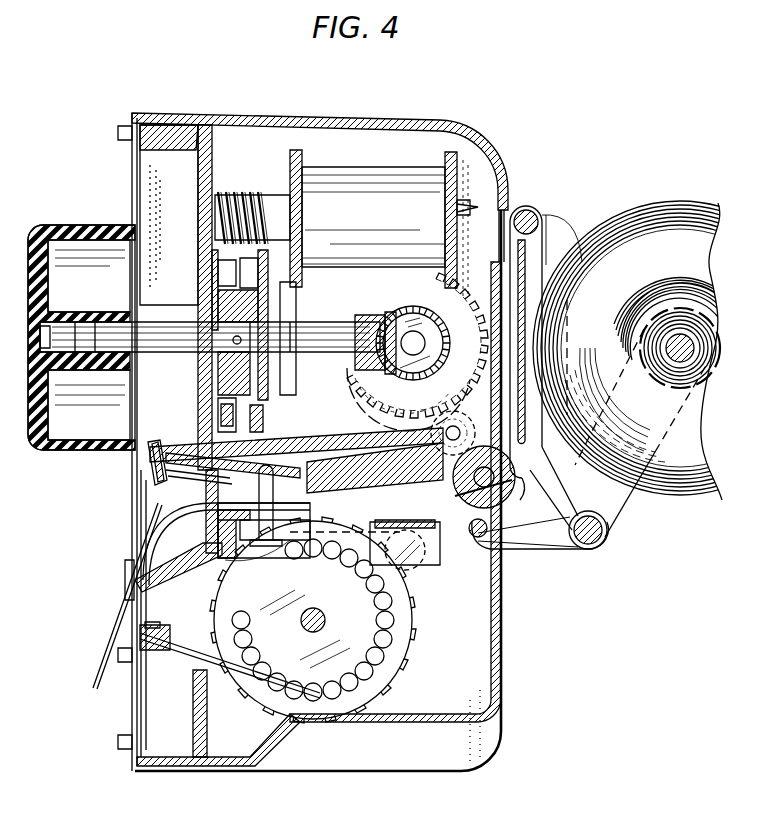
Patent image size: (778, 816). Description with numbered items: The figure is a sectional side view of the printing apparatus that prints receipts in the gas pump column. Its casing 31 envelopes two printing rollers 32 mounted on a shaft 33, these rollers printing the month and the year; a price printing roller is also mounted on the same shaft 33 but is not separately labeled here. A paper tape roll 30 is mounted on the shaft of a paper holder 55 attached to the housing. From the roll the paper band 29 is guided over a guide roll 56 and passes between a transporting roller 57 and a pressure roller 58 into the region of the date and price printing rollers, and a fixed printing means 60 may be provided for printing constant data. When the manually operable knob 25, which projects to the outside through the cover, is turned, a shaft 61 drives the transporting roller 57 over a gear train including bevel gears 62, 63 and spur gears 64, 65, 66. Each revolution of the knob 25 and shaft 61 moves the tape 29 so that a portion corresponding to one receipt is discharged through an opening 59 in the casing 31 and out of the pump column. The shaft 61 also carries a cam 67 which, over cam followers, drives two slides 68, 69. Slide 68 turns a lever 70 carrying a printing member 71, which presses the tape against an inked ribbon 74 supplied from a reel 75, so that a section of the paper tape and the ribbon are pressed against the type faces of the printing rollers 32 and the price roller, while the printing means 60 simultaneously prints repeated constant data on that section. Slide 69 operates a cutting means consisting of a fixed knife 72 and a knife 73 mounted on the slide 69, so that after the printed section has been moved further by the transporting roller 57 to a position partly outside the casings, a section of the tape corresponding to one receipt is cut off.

The manually operable knob 25 is at (95, 233).
The paper band 29 is at (110, 646).
The paper tape roll 30 is at (625, 238).
The casing 31 is at (327, 122).
The printing rollers 32 is at (400, 632).
The shaft 33 is at (320, 620).
The paper holder 55 is at (620, 510).
The guide roll 56 is at (528, 210).
The transporting roller 57 is at (513, 493).
The pressure roller 58 is at (525, 545).
The opening 59 is at (130, 580).
The fixed printing means 60 is at (428, 562).
The shaft 61 is at (72, 326).
The bevel gear 62 is at (390, 312).
The bevel gear 63 is at (418, 384).
The spur gear 64 is at (472, 308).
The spur gear 65 is at (466, 422).
The spur gear 66 is at (455, 476).
The cam 67 is at (252, 304).
The slide 68 is at (262, 418).
The slide 69 is at (212, 414).
The lever 70 is at (303, 447).
The printing member 71 is at (348, 470).
The fixed knife 72 is at (218, 530).
The knife 73 is at (200, 478).
The inked ribbon 74 is at (393, 182).
The reel 75 is at (300, 160).